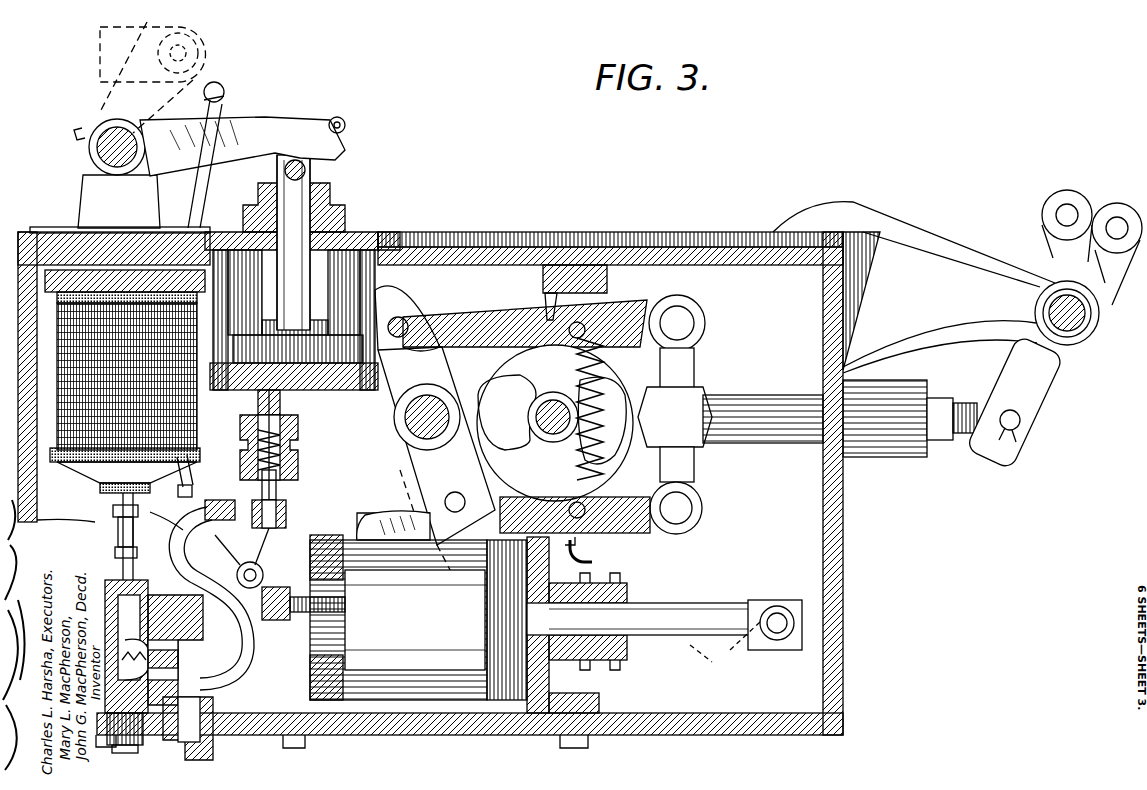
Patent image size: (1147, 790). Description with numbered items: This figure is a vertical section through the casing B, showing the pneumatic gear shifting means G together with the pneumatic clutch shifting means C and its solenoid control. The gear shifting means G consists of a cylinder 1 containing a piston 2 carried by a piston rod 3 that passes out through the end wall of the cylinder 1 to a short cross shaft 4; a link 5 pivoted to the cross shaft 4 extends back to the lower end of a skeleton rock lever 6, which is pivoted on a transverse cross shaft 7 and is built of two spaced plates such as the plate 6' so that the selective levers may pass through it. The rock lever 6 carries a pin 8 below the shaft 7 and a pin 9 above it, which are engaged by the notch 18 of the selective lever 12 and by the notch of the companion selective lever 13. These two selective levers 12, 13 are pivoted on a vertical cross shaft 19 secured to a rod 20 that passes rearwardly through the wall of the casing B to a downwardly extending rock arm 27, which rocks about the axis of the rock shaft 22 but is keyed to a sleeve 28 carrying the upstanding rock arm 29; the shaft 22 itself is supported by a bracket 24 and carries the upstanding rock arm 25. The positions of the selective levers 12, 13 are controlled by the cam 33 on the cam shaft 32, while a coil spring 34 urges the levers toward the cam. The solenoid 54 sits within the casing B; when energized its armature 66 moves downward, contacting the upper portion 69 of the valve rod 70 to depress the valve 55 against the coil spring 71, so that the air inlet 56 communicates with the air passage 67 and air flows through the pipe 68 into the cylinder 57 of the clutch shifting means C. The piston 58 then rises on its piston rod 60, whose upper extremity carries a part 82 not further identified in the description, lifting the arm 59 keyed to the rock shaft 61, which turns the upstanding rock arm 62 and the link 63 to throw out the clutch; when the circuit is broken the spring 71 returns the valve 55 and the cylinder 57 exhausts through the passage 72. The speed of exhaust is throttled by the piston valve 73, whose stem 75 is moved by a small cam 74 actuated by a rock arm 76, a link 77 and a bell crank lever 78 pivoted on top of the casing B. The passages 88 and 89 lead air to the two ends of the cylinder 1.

The cylinder 1 is at (432, 713).
The piston 2 is at (555, 672).
The piston rod 3 is at (675, 603).
The cross shaft 4 is at (778, 612).
The link 5 is at (725, 647).
The skeleton rock lever 6 is at (431, 487).
The plate 6' is at (440, 360).
The cross shaft 7 is at (412, 414).
The pin 8 is at (450, 492).
The pin 9 is at (405, 318).
The selective lever 12 is at (625, 533).
The selective lever 13 is at (472, 325).
The notch 18 is at (358, 520).
The vertical cross shaft 19 is at (705, 465).
The rod 20 is at (768, 380).
The rock shaft 22 is at (1085, 330).
The bracket 24 is at (883, 215).
The upstanding rock arm 25 is at (1070, 195).
The rock arm 27 is at (1040, 378).
The sleeve 28 is at (1085, 320).
The upstanding rock arm 29 is at (1115, 205).
The cam shaft 32 is at (545, 410).
The cam 33 is at (600, 345).
The coil spring 34 is at (600, 485).
The solenoid 54 is at (175, 425).
The valve 55 is at (140, 610).
The air inlet 56 is at (215, 755).
The cylinder 57 is at (378, 232).
The piston 58 is at (325, 363).
The arm 59 is at (250, 128).
The piston rod 60 is at (315, 200).
The rock shaft 61 is at (105, 150).
The upstanding rock arm 62 is at (128, 100).
The link 63 is at (147, 22).
The armature 66 is at (112, 508).
The air passage 67 is at (245, 690).
The pipe 68 is at (160, 520).
The upper portion of valve rod 69 is at (118, 530).
The valve rod 70 is at (125, 560).
The coil spring 71 is at (110, 745).
The passage 72 is at (205, 640).
The piston valve 73 is at (300, 500).
The cam 74 is at (265, 573).
The stem 75 is at (300, 535).
The rock arm 76 is at (222, 550).
The link 77 is at (205, 478).
The bell crank lever 78 is at (228, 105).
The piston rod pin 82 is at (305, 165).
The passage 88 is at (592, 562).
The passage 89 is at (305, 578).
The casing B is at (843, 520).
The pneumatic clutch shifting means C is at (250, 240).
The pneumatic gear shifting means G is at (418, 617).